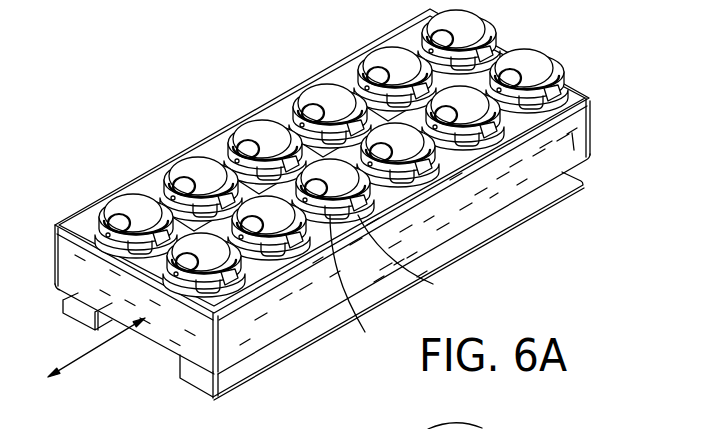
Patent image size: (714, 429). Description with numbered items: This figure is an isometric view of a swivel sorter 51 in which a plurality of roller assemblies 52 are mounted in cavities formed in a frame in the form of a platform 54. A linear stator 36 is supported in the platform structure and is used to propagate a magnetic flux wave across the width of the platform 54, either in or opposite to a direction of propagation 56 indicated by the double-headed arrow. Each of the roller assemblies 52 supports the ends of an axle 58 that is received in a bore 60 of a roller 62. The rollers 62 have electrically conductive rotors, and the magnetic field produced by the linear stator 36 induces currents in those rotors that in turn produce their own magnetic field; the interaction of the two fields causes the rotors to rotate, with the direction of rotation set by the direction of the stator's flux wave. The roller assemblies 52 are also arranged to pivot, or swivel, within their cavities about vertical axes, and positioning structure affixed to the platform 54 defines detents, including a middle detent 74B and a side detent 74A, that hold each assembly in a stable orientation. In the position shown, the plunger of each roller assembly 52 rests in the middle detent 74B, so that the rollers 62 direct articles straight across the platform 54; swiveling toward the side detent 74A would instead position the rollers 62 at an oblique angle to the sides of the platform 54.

The sorter 51 is at (333, 201).
The roller assemblies 52 is at (333, 191).
The platform 54 is at (590, 149).
The linear stator 36 is at (503, 225).
The direction of propagation 56 is at (91, 352).
The axles 58 is at (185, 186).
The bores 60 is at (437, 47).
The rollers 62 is at (267, 133).
The side detent 74A is at (367, 283).
The middle detent 74B is at (416, 258).